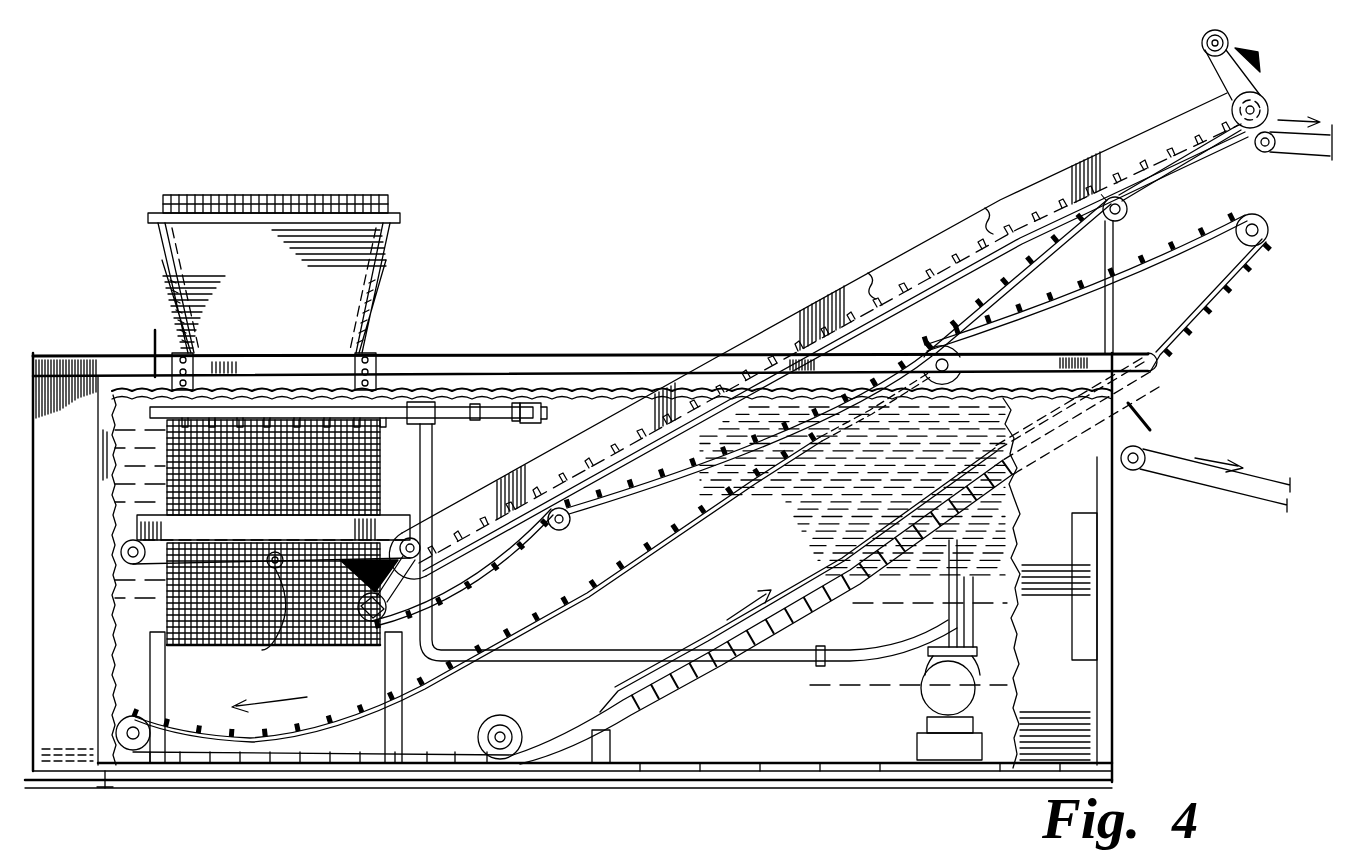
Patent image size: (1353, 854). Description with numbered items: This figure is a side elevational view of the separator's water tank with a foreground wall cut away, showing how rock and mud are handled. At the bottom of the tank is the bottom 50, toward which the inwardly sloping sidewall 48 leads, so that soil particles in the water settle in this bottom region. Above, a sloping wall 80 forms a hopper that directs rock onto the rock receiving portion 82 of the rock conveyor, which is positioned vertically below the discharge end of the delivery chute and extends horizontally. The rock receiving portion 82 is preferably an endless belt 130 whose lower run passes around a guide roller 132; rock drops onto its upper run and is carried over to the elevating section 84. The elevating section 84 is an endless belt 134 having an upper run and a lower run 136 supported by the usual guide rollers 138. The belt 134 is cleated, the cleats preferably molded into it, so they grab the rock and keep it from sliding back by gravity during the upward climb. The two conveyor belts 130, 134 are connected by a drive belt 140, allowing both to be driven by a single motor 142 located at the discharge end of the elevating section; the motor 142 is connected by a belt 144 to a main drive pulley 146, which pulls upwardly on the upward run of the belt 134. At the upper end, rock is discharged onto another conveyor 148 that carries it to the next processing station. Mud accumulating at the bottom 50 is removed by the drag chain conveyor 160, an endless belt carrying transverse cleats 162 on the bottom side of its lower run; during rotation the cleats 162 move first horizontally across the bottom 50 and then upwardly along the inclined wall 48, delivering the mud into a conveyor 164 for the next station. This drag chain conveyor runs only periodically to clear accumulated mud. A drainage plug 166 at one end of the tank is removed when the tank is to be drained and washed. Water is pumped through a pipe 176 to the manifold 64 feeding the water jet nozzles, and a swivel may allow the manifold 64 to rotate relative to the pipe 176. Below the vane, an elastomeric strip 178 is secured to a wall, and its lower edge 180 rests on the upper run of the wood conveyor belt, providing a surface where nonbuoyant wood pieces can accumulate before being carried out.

The sidewall 48 is at (668, 706).
The bottom 50 is at (327, 772).
The manifold 64 is at (252, 408).
The sloping wall 80 is at (422, 492).
The rock receiving portion 82 is at (150, 518).
The elevating section 84 is at (676, 430).
The endless belt 130 is at (147, 566).
The guide roller 132 is at (260, 648).
The endless belt 134 is at (628, 425).
The lower run 136 is at (496, 565).
The guide rollers 138 is at (571, 521).
The drive belt 140 is at (458, 535).
The motor 142 is at (1228, 40).
The belt 144 is at (1222, 97).
The main drive pulley 146 is at (1215, 114).
The conveyor 148 is at (1303, 158).
The drag chain conveyor 160 is at (638, 568).
The cleats 162 is at (1152, 411).
The conveyor 164 is at (1195, 469).
The drainage plug 166 is at (72, 766).
The pipe 176 is at (826, 663).
The strip 178 is at (472, 406).
The lower edge 180 is at (533, 412).